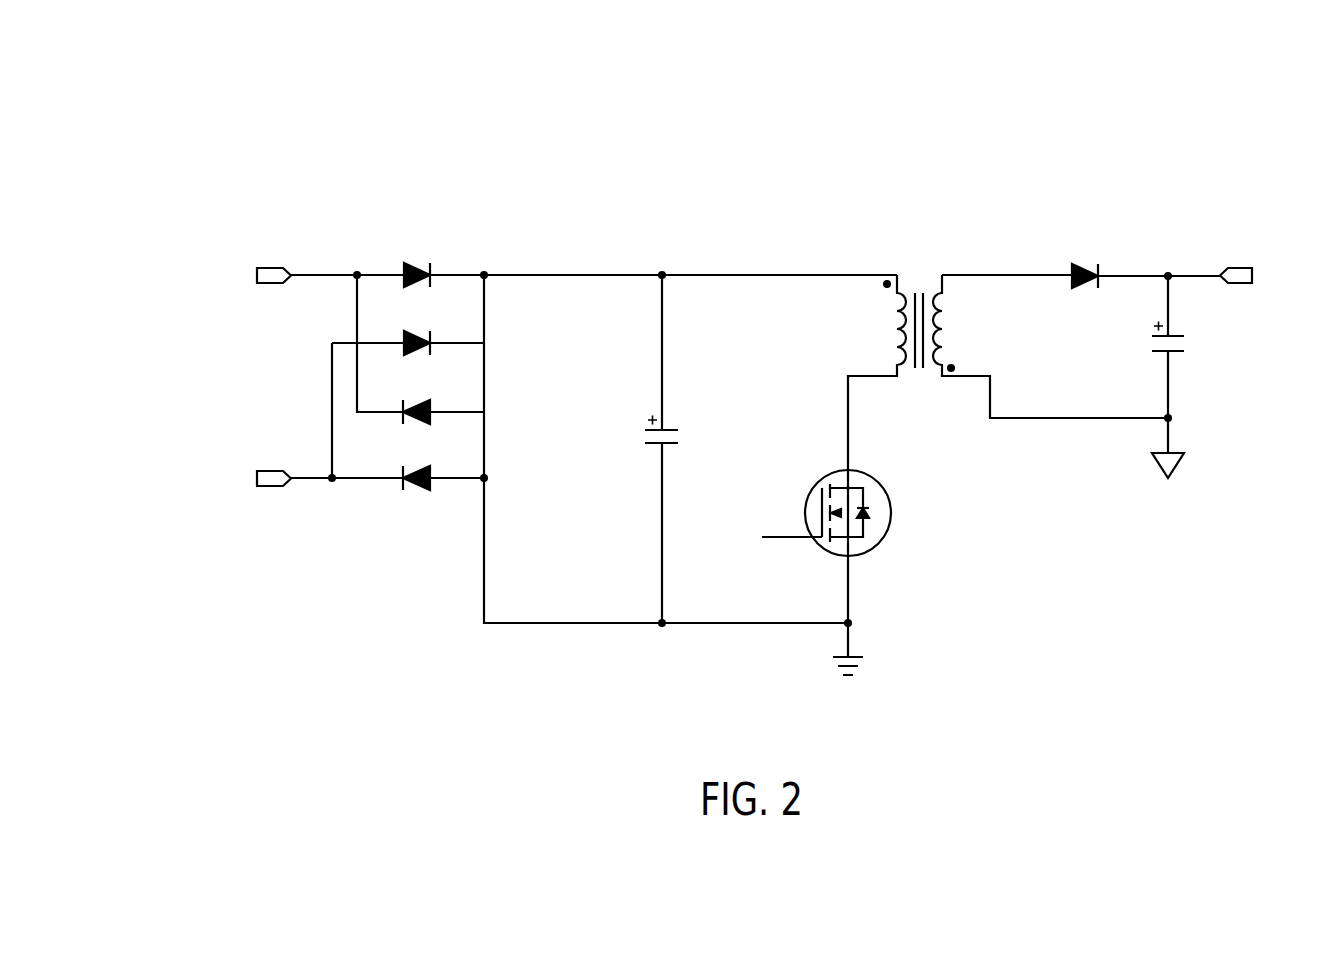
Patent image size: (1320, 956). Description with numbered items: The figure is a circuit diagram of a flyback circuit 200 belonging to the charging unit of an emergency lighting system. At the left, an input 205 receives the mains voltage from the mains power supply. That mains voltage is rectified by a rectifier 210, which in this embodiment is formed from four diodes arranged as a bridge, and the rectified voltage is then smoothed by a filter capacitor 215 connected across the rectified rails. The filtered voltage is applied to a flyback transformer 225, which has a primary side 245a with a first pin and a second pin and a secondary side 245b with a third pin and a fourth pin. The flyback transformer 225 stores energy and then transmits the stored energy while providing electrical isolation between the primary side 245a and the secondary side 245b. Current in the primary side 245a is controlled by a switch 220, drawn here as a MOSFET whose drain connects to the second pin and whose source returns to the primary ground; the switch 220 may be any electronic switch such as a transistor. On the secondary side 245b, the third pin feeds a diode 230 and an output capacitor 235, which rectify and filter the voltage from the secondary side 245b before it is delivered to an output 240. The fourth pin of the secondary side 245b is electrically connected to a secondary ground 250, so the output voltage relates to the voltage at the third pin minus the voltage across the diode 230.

The flyback circuit 200 is at (232, 155).
The input 205 is at (243, 383).
The rectifier 210 is at (384, 257).
The filter capacitor 215 is at (636, 434).
The switch 220 is at (885, 535).
The flyback transformer 225 is at (975, 307).
The diode 230 is at (1102, 270).
The output capacitor 235 is at (1205, 351).
The output 240 is at (1237, 268).
The primary side 245a is at (870, 320).
The secondary side 245b is at (962, 320).
The secondary ground 250 is at (1152, 432).